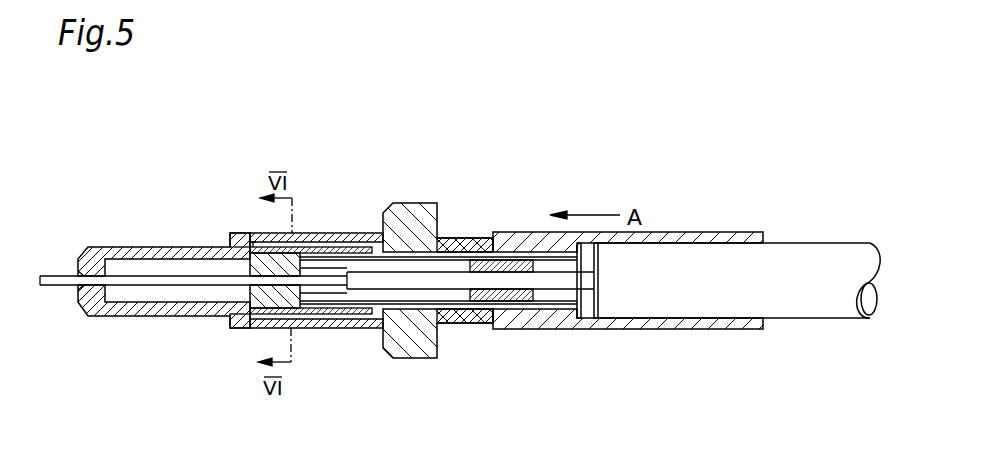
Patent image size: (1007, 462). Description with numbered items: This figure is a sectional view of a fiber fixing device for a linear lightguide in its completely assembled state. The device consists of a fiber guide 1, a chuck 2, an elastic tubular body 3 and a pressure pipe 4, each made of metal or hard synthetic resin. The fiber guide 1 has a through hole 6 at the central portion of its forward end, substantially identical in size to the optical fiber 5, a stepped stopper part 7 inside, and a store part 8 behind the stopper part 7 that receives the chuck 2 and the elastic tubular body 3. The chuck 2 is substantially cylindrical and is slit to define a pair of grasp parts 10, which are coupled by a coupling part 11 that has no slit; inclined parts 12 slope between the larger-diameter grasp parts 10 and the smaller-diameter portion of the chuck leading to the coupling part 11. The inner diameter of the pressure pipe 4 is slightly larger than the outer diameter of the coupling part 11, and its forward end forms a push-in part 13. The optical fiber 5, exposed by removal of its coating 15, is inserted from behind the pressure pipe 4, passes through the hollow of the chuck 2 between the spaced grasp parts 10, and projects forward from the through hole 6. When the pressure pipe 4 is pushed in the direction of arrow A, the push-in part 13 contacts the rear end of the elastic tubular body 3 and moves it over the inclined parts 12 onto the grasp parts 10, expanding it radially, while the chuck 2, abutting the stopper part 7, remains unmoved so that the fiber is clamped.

The fiber guide 1 is at (118, 317).
The chuck 2 is at (343, 328).
The elastic tubular body 3 is at (323, 233).
The pressure pipe 4 is at (672, 329).
The optical fiber 5 is at (57, 287).
The through hole 6 is at (78, 275).
The stopper part 7 is at (236, 241).
The store part 8 is at (252, 245).
The grasp parts 10 is at (260, 245).
The coupling part 11 is at (470, 250).
The inclined parts 12 is at (305, 328).
The push-in part 13 is at (372, 232).
The coating 15 is at (548, 284).